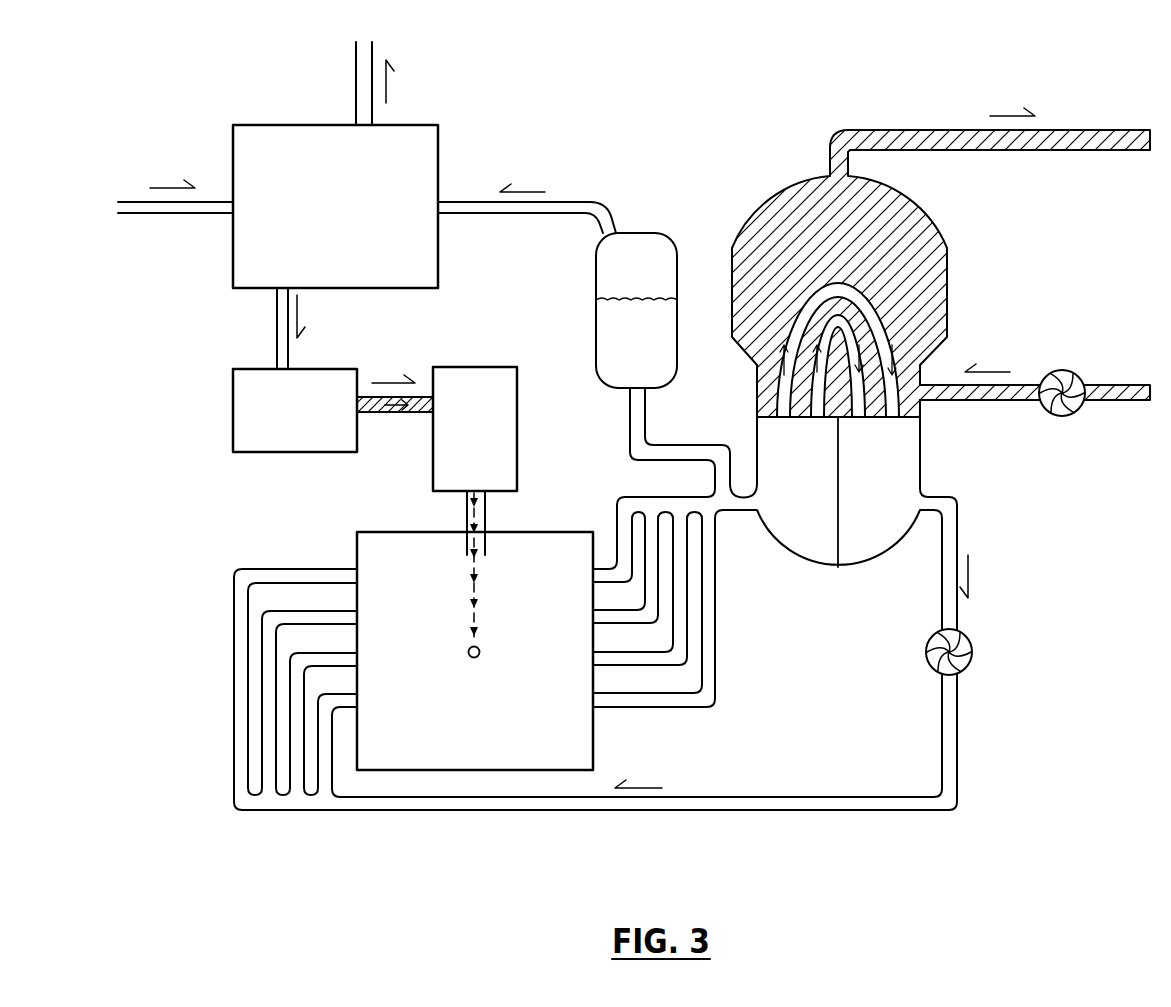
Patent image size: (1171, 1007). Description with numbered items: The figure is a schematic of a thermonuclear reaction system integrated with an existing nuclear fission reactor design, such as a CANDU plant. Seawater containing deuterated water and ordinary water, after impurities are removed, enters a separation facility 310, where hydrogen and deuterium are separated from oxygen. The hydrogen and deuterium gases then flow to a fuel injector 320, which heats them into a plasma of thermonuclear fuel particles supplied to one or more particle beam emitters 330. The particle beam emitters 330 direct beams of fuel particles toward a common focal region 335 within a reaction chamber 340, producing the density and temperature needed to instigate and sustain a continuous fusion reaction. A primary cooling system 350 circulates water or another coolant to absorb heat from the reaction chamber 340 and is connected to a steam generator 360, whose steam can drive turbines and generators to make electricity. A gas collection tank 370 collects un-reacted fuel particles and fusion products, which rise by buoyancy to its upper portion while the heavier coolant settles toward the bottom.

The separation facility 310 is at (359, 224).
The fuel injector 320 is at (315, 426).
The particle beam emitter 330 is at (500, 441).
The common focal region 335 is at (479, 656).
The reaction chamber 340 is at (570, 758).
The primary cooling system 350 is at (533, 806).
The steam generator 360 is at (854, 254).
The gas collection tank 370 is at (636, 228).